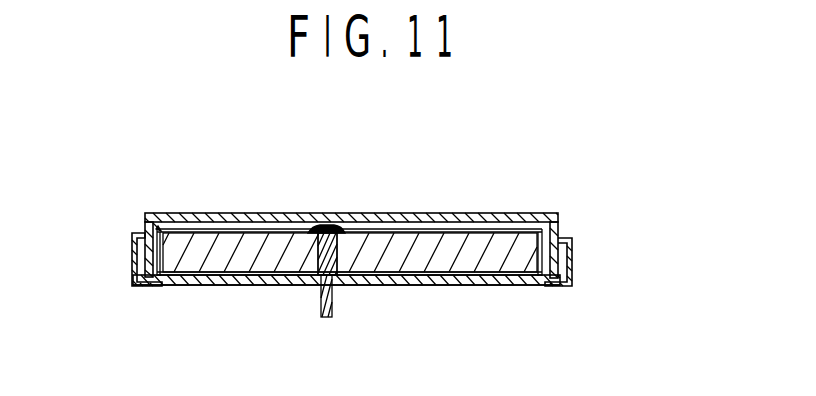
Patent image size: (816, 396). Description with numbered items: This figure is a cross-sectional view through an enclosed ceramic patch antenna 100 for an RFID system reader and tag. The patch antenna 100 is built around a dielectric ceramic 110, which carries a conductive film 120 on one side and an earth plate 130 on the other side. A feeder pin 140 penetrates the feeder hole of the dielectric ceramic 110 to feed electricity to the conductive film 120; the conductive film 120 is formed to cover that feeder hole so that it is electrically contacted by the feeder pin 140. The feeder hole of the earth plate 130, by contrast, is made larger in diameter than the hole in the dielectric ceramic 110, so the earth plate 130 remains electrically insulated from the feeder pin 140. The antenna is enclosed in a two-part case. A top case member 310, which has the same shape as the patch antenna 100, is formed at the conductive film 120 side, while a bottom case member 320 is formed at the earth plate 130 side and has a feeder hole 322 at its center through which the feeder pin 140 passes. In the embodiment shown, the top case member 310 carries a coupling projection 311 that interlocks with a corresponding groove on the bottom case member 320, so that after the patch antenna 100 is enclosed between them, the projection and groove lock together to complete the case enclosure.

The patch antenna 100 is at (145, 213).
The dielectric ceramic 110 is at (183, 284).
The conductive film 120 is at (470, 231).
The earth plate 130 is at (517, 285).
The feeder pin 140 is at (321, 300).
The top case member 310 is at (403, 213).
The coupling projection 311 is at (563, 237).
The bottom case member 320 is at (427, 276).
The feeder hole 322 is at (333, 277).